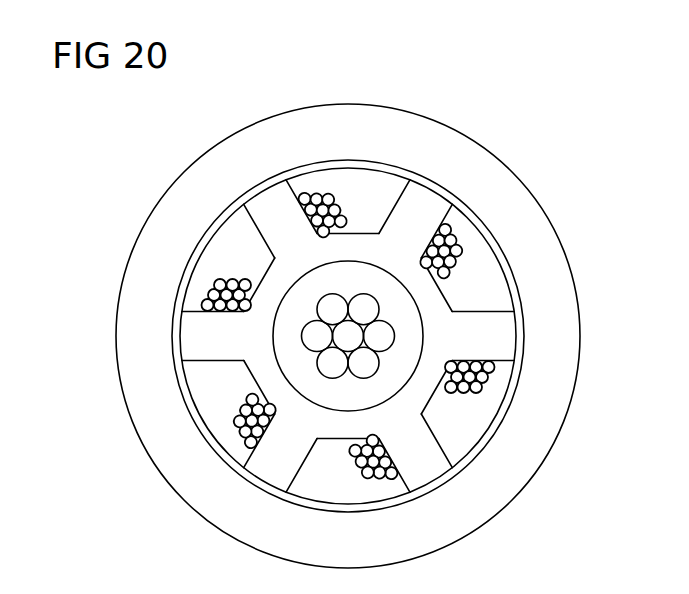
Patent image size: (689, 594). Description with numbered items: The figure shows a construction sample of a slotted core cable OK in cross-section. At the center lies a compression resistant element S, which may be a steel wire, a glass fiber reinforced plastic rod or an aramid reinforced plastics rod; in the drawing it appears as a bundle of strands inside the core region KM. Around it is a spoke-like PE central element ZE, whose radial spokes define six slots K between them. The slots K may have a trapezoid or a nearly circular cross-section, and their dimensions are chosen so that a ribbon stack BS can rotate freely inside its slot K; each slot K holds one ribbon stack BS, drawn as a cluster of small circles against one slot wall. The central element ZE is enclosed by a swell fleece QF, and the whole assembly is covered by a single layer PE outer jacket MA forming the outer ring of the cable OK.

The cable OK is at (144, 192).
The outer jacket MA is at (163, 442).
The swell fleece QF is at (503, 422).
The central element ZE is at (500, 340).
The slot K is at (367, 186).
The ribbon stack BS is at (474, 257).
The cable core KM is at (289, 335).
The compression resistant element S is at (383, 333).